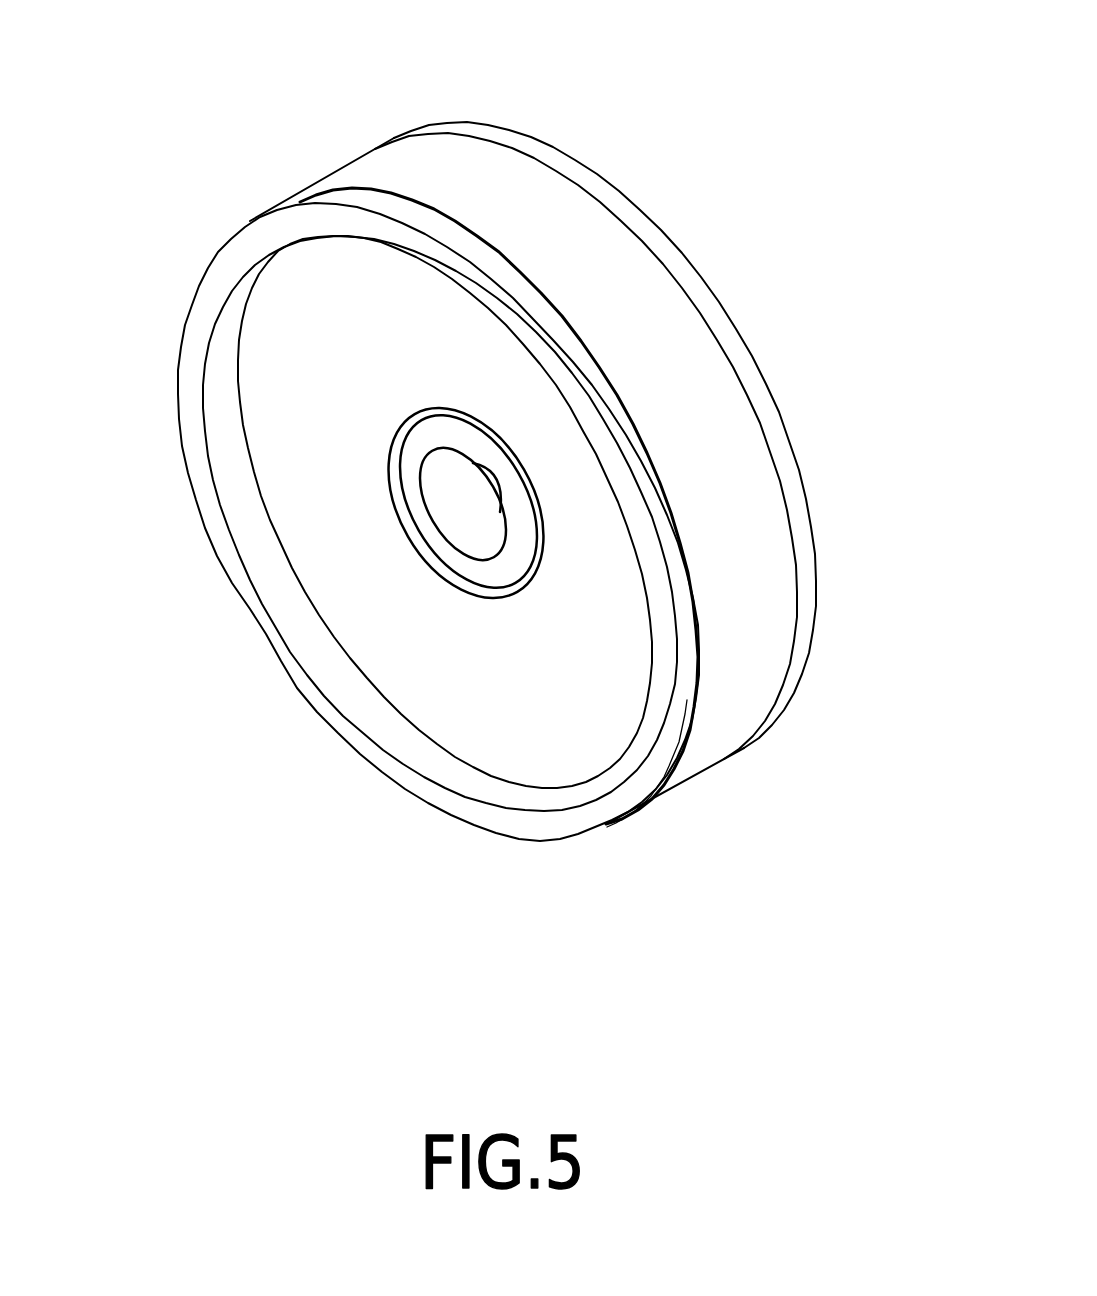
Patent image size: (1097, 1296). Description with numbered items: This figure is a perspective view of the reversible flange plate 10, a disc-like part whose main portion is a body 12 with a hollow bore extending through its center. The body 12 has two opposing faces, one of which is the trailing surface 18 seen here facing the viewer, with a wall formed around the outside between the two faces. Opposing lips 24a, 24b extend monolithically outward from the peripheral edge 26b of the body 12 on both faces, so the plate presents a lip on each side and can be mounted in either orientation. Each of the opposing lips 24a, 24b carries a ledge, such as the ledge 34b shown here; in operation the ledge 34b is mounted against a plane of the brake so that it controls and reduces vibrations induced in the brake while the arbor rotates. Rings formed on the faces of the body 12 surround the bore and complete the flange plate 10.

The reversible flange plate 10 is at (504, 493).
The body 12 is at (602, 820).
The trailing surface 18 is at (420, 792).
The lip 24a is at (588, 178).
The lip 24b is at (262, 626).
The peripheral edge 26b is at (667, 748).
The ledge 34b is at (183, 372).